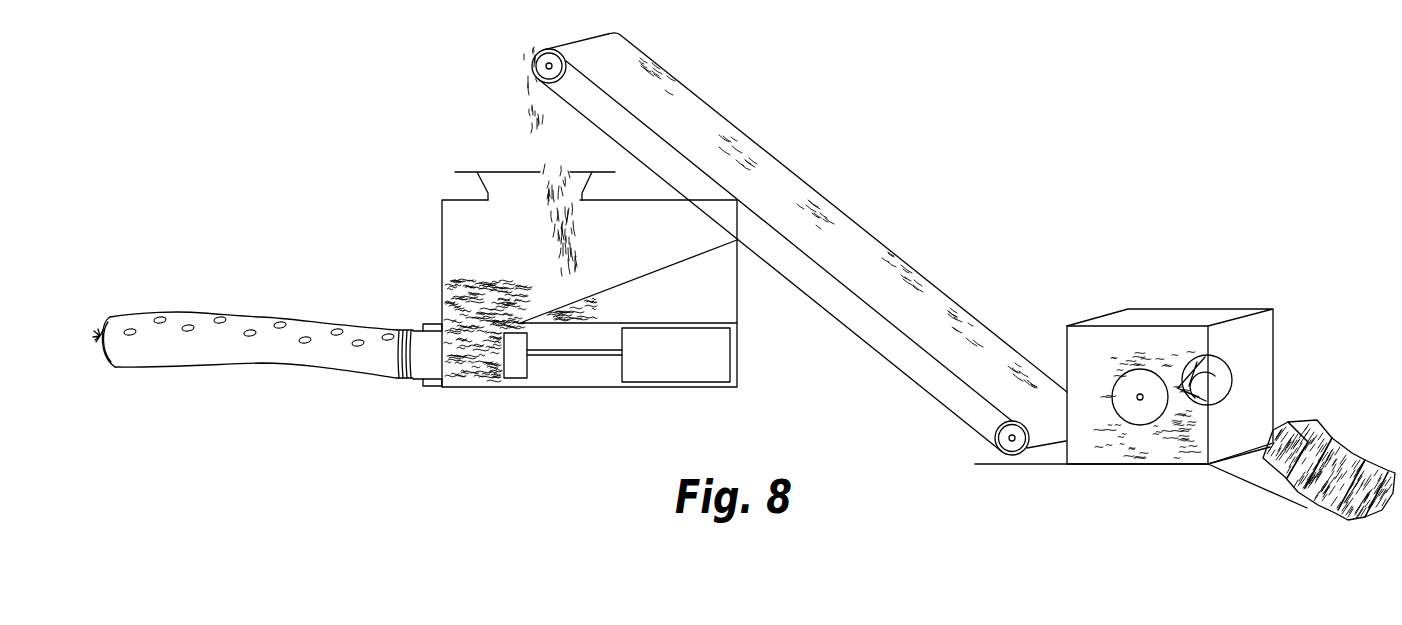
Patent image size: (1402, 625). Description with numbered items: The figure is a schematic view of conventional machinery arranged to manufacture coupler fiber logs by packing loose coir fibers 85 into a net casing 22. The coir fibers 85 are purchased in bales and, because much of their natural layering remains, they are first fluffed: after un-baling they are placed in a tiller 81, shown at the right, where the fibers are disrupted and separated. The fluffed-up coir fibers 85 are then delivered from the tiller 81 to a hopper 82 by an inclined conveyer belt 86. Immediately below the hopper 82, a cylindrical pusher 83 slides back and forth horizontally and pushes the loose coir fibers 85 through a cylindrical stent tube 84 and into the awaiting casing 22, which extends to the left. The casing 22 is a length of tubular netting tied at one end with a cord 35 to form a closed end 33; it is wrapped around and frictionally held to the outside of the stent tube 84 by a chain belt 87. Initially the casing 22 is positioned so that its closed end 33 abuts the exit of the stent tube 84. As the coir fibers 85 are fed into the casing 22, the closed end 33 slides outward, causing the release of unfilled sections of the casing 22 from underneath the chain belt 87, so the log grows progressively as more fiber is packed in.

The casing 22 is at (197, 313).
The closed end 33 is at (105, 327).
The cord 35 is at (100, 350).
The tiller 81 is at (1122, 315).
The hopper 82 is at (440, 238).
The pusher 83 is at (538, 355).
The stent tube 84 is at (405, 380).
The coir fibers 85 is at (458, 377).
The conveyer belt 86 is at (768, 158).
The chain belt 87 is at (410, 330).